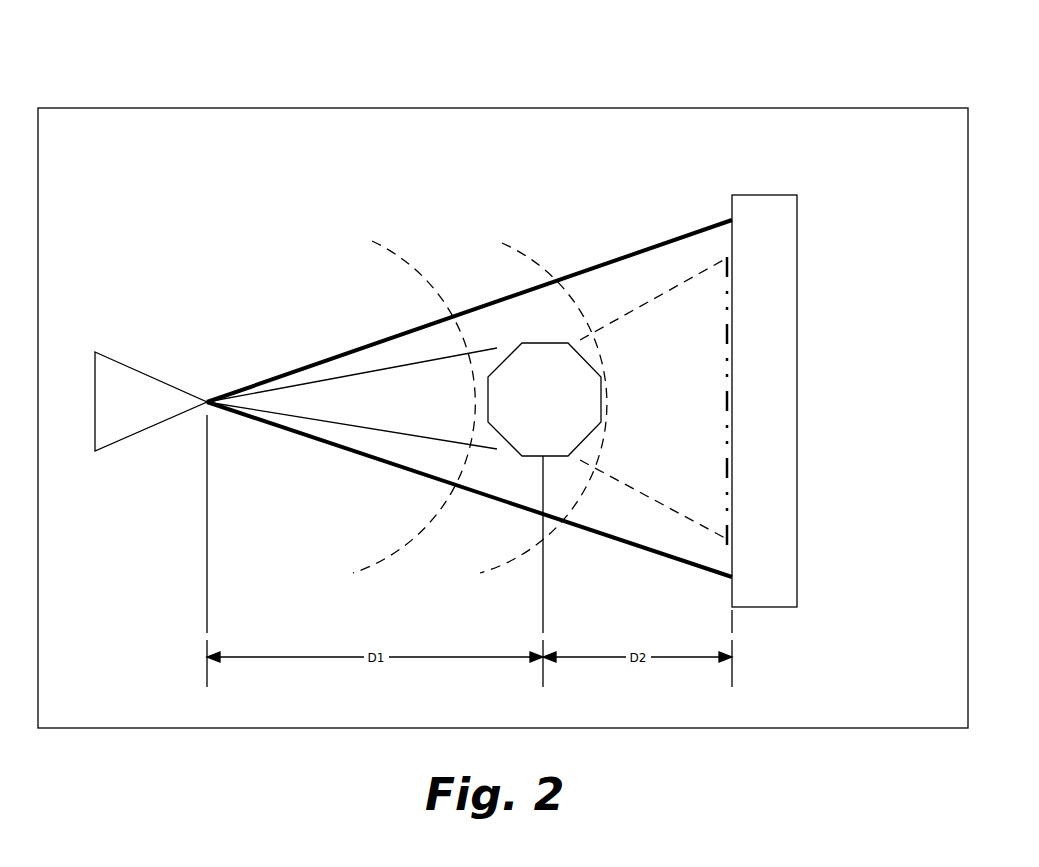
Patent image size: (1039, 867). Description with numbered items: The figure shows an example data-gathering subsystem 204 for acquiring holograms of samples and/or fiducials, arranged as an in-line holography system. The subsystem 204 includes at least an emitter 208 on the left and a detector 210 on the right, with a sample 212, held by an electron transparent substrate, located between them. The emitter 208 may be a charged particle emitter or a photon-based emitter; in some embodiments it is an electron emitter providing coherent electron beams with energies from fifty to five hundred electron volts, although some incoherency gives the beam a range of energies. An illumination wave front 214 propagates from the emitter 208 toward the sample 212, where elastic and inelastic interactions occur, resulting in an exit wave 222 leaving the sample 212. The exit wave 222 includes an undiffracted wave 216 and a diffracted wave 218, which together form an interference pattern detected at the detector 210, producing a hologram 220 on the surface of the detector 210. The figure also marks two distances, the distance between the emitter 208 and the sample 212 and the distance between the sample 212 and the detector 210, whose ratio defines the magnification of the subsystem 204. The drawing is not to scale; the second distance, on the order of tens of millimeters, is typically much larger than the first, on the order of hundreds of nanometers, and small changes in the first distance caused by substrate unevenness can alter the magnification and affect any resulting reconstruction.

The data-gathering subsystem 204 is at (226, 108).
The emitter 208 is at (151, 401).
The detector 210 is at (764, 401).
The sample 212 is at (544, 399).
The illumination wave front 214 is at (383, 566).
The undiffracted wave 216 is at (578, 262).
The diffracted wave 218 is at (695, 262).
The hologram 220 is at (742, 335).
The exit wave 222 is at (496, 573).